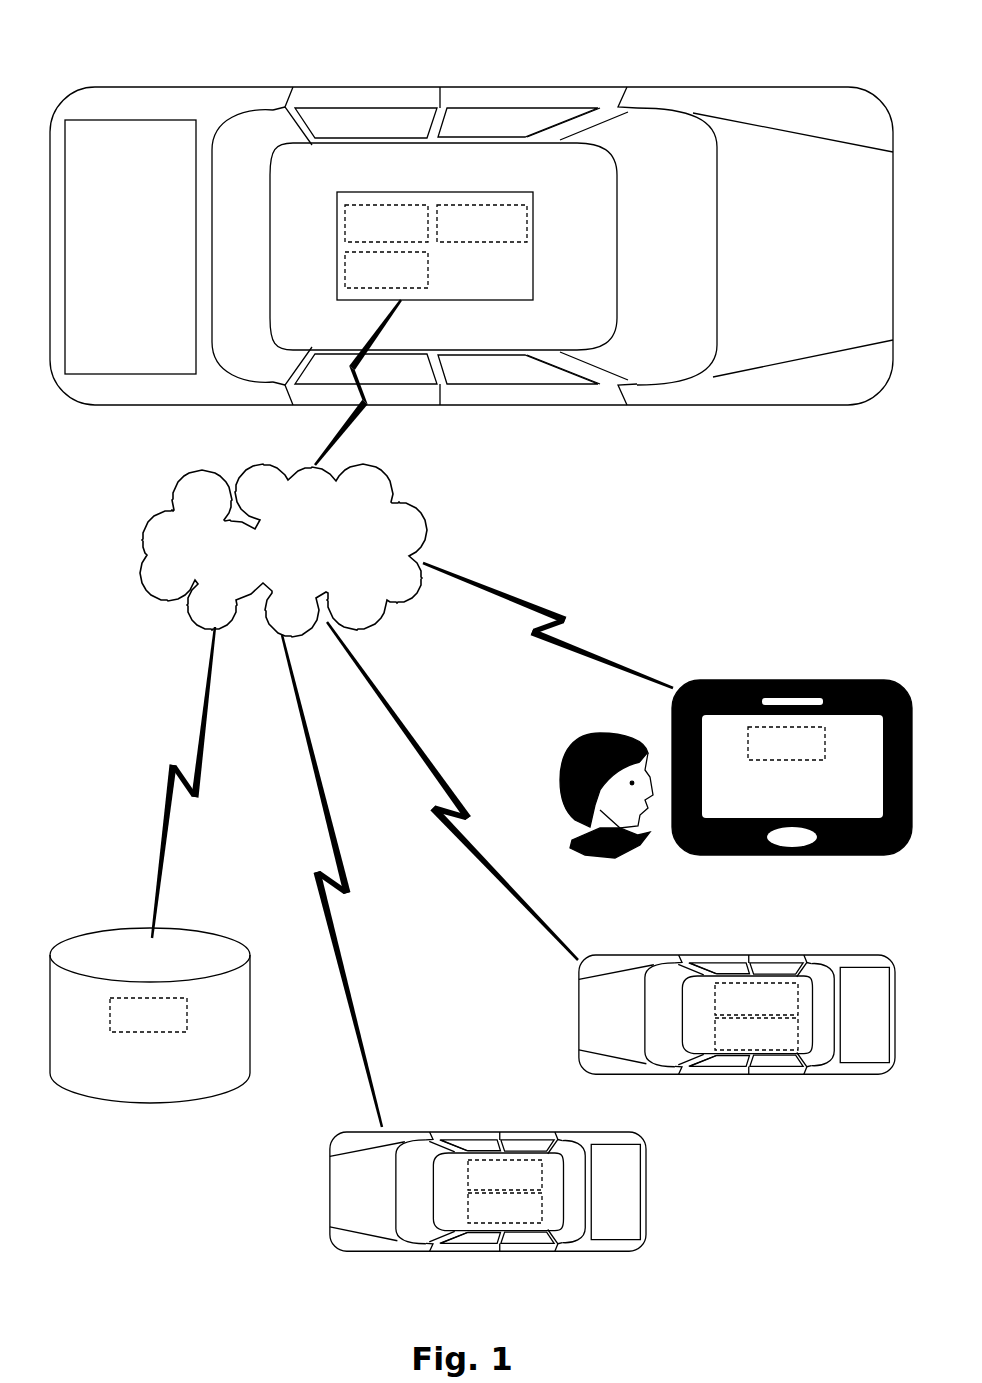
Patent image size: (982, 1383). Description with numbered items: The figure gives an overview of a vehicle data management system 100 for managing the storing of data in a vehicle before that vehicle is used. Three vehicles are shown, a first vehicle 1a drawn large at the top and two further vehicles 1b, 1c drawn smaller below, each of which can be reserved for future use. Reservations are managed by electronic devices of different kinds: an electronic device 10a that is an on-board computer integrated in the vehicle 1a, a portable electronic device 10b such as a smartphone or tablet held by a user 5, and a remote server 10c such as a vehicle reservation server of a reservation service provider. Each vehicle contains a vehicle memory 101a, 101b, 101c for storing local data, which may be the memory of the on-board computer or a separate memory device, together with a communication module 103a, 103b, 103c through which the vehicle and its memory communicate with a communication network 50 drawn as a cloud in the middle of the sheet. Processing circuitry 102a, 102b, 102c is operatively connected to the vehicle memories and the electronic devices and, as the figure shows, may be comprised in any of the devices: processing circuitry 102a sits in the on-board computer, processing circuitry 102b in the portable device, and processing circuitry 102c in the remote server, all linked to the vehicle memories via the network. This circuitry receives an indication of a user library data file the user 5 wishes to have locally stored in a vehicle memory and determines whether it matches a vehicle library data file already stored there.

The vehicle data management system 100 is at (58, 63).
The first vehicle 1a is at (471, 298).
The first vehicle 1b is at (737, 1014).
The first vehicle 1c is at (488, 1191).
The electronic device 10a is at (503, 313).
The portable electronic device 10b is at (851, 670).
The remote server 10c is at (137, 1123).
The first vehicle memory 101a is at (386, 223).
The processing circuitry 102a is at (482, 223).
The first communication module 103a is at (386, 270).
The first vehicle memory 101b is at (756, 999).
The first communication module 103b is at (756, 1034).
The first vehicle memory 101c is at (505, 1175).
The first communication module 103c is at (505, 1208).
The processing circuitry 102b is at (786, 743).
The processing circuitry 102c is at (148, 1015).
The communication network 50 is at (283, 550).
The user 5 is at (606, 813).